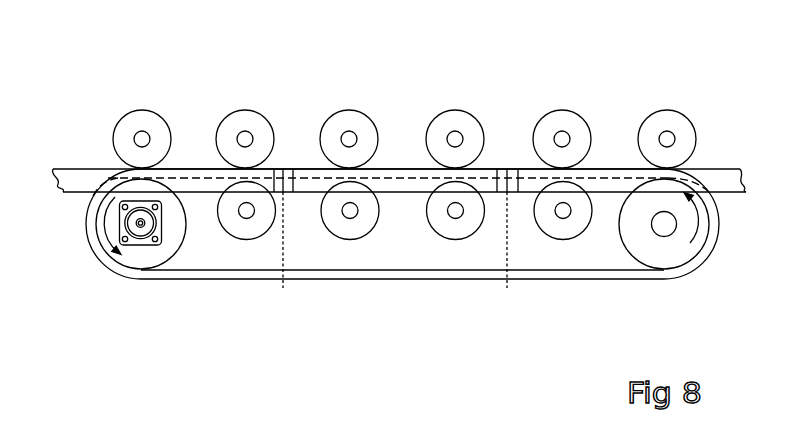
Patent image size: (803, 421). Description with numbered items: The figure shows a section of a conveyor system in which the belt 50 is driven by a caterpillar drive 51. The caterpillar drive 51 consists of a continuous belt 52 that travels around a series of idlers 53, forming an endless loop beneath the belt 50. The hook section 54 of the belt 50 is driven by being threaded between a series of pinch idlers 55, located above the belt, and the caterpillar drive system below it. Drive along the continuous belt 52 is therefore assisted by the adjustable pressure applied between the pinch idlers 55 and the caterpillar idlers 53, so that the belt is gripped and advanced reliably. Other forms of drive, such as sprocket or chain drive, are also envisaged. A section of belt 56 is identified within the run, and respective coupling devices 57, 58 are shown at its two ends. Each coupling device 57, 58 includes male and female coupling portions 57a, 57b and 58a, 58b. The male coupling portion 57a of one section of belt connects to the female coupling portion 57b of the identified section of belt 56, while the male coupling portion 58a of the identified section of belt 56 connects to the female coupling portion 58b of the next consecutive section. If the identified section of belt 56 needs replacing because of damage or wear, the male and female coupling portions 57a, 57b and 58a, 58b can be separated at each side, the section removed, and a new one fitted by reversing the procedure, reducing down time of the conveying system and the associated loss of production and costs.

The belt 50 is at (72, 208).
The caterpillar drive 51 is at (291, 312).
The continuous belt 52 is at (733, 203).
The idlers 53 is at (561, 240).
The hook section 54 is at (53, 170).
The pinch idlers 55 is at (577, 110).
The section of belt 56 is at (422, 248).
The coupling device 57 is at (283, 169).
The male coupling portion 57a is at (282, 169).
The female coupling portion 57b is at (294, 169).
The coupling device 58 is at (507, 169).
The male coupling portion 58a is at (497, 169).
The female coupling portion 58b is at (518, 169).